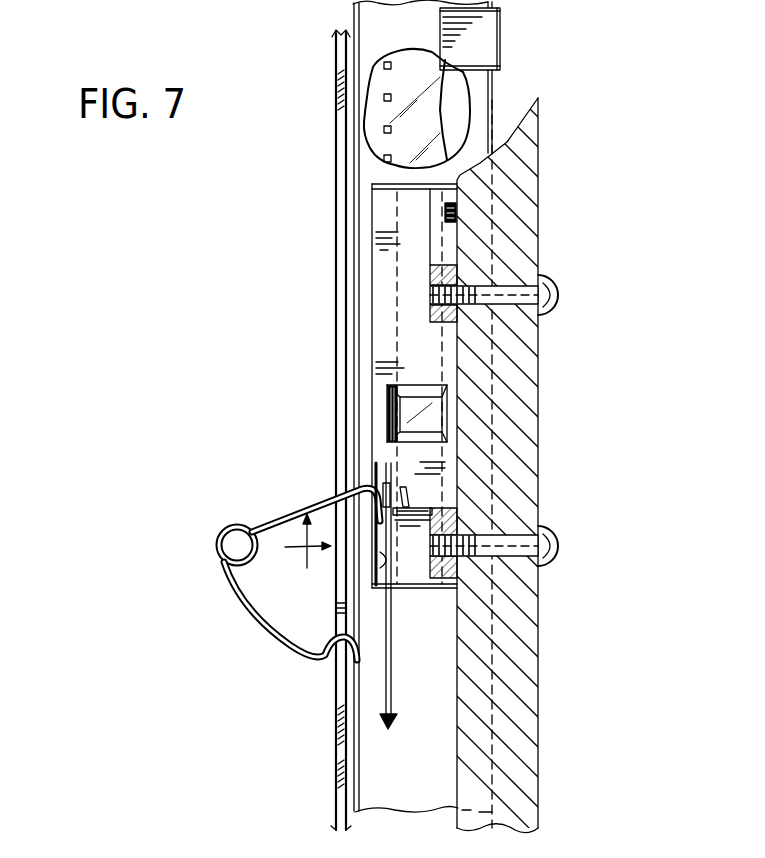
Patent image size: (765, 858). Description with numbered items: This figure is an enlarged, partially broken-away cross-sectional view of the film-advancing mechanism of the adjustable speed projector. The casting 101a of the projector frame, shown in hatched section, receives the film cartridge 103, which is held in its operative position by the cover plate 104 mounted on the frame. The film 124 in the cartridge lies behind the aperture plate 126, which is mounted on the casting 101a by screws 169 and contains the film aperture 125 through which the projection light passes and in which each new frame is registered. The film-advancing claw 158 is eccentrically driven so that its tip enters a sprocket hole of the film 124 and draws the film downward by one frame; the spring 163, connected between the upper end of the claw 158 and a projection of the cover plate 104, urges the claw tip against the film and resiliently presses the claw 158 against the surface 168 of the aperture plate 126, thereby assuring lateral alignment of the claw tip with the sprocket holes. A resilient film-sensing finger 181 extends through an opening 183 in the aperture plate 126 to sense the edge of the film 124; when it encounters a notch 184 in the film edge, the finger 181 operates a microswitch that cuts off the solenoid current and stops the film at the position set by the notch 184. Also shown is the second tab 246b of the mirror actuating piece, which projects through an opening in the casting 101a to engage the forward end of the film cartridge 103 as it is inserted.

The casting 101a is at (537, 713).
The film cartridge 103 is at (378, 758).
The cover plate 104 is at (338, 692).
The film 124 is at (403, 97).
The film aperture 125 is at (393, 405).
The aperture plate 126 is at (388, 290).
The film-advancing claw 158 is at (391, 645).
The spring 163 is at (290, 505).
The surface 168 is at (392, 582).
The screws 169 is at (548, 276).
The film-sensing finger 181 is at (457, 210).
The opening 183 is at (443, 212).
The notch 184 is at (447, 107).
The second tab 246b is at (474, 43).